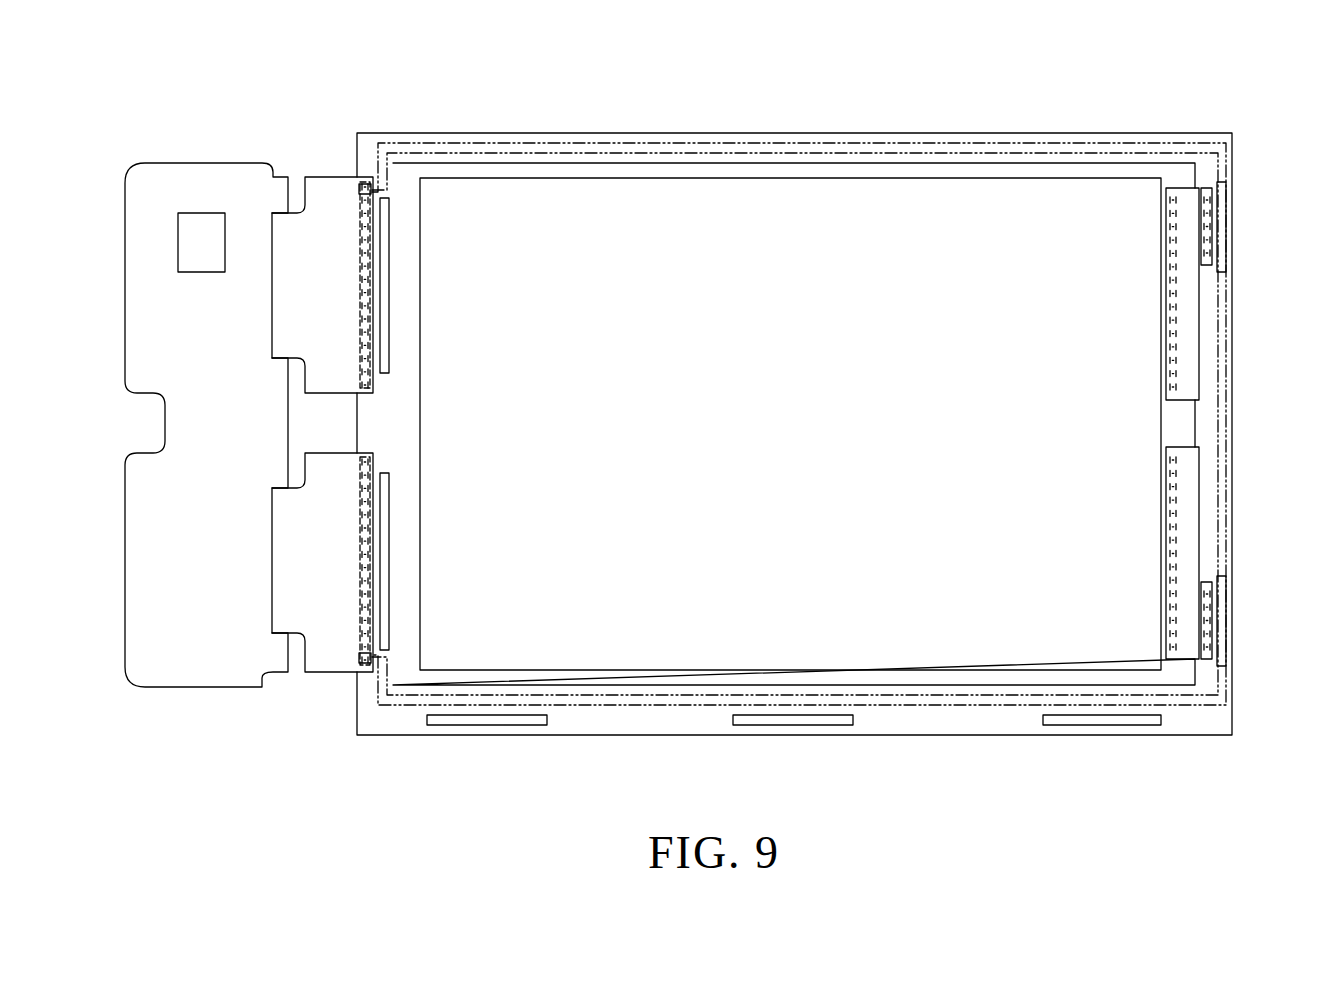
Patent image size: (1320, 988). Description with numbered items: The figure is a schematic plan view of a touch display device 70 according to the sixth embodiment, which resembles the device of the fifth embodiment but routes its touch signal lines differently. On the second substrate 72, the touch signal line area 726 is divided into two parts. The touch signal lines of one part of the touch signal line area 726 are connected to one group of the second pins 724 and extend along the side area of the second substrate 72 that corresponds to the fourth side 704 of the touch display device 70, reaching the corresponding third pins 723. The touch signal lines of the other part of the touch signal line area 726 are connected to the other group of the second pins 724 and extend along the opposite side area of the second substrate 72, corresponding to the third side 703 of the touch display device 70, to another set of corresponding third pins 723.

The touch display device 70 is at (635, 48).
The second substrate 72 is at (962, 718).
The third side 703 is at (544, 750).
The fourth side 704 is at (540, 113).
The third pins 723 is at (360, 212).
The second pins 724 is at (1210, 200).
The touch signal line area 726 is at (725, 148).